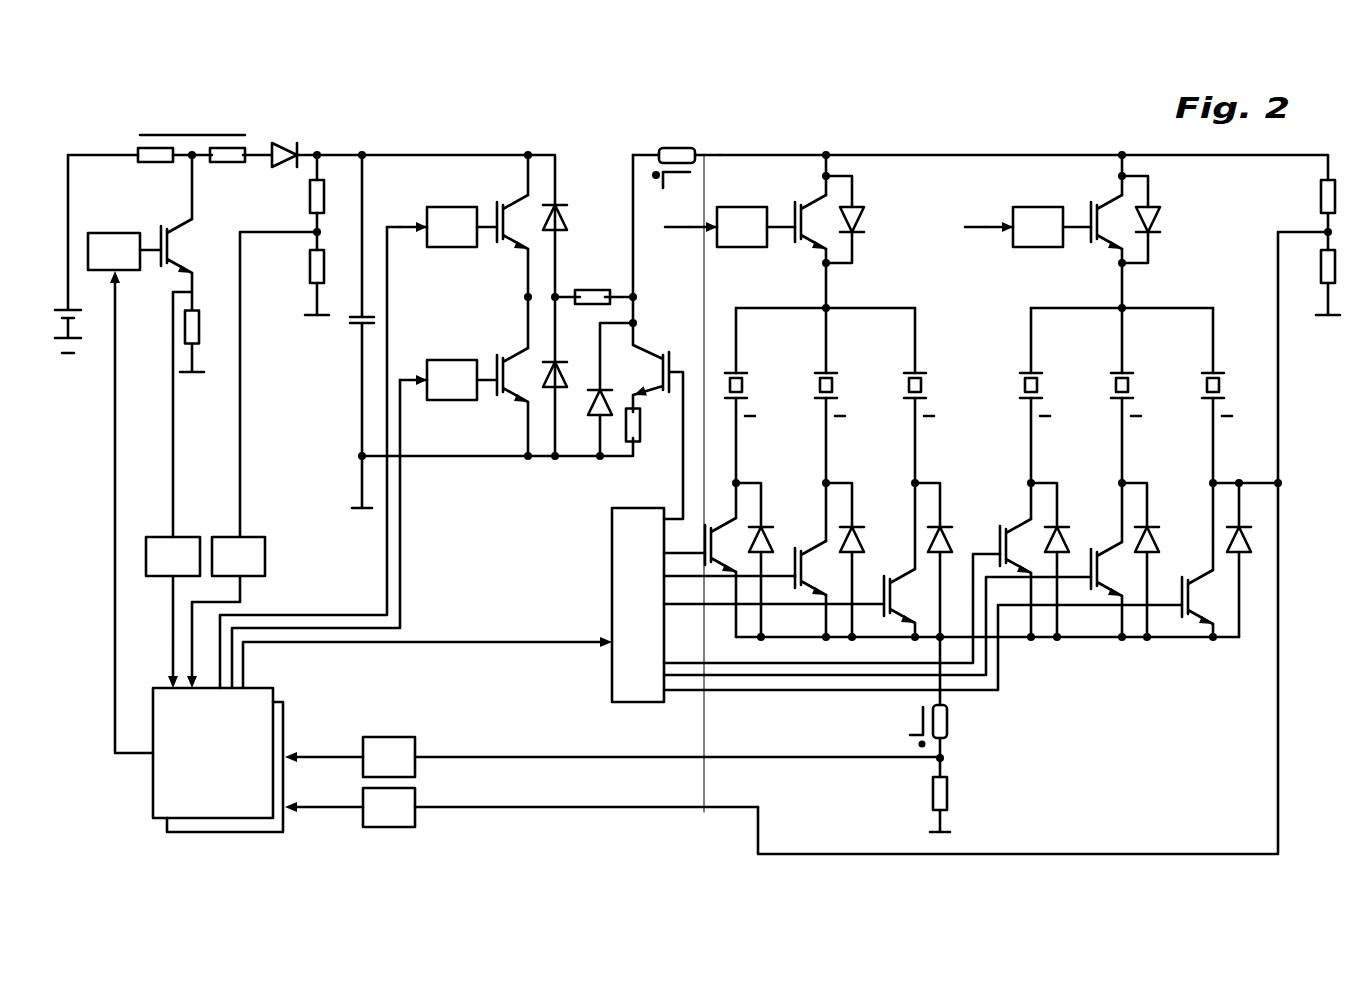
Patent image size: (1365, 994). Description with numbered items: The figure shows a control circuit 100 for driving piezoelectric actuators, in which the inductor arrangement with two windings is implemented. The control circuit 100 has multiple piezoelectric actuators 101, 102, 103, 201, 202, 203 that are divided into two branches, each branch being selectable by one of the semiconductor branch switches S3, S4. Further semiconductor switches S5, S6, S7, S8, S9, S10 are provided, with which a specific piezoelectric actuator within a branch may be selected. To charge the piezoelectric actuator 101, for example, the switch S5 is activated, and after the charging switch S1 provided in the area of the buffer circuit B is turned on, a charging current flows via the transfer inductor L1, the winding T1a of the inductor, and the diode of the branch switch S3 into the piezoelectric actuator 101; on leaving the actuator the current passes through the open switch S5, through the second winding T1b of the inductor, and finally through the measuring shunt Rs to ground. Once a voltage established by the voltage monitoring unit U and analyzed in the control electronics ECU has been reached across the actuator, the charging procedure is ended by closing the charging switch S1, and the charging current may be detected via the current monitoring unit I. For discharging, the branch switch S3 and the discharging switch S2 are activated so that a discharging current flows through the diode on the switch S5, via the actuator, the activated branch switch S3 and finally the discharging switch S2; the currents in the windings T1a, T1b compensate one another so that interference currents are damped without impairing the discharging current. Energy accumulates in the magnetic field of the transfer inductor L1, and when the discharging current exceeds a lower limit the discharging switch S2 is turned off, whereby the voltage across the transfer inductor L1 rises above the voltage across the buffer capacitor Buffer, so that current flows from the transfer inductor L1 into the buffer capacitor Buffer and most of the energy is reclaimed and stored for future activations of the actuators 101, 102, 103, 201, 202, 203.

The control circuit 100 is at (122, 782).
The piezoelectric actuator 101 is at (730, 395).
The piezoelectric actuator 102 is at (818, 395).
The piezoelectric actuator 103 is at (907, 395).
The piezoelectric actuator 201 is at (1024, 395).
The piezoelectric actuator 202 is at (1111, 395).
The piezoelectric actuator 203 is at (1203, 395).
The buffer circuit B is at (456, 144).
The charging switch S1 is at (457, 226).
The discharging switch S2 is at (464, 376).
The branch switch S3 is at (764, 231).
The branch switch S4 is at (1062, 231).
The switch S5 is at (739, 547).
The switch S6 is at (829, 547).
The switch S7 is at (918, 547).
The switch S8 is at (1034, 547).
The switch S9 is at (1125, 547).
The switch S10 is at (1232, 547).
The transfer inductor L1 is at (594, 281).
The winding of inductor T1a is at (680, 148).
The second winding of inductor T1b is at (950, 718).
The measuring shunt Rs is at (955, 804).
The current monitoring unit I is at (392, 738).
The voltage monitoring unit U is at (390, 826).
The buffer capacitor Buffer is at (353, 328).
The control electronics ECU is at (218, 760).